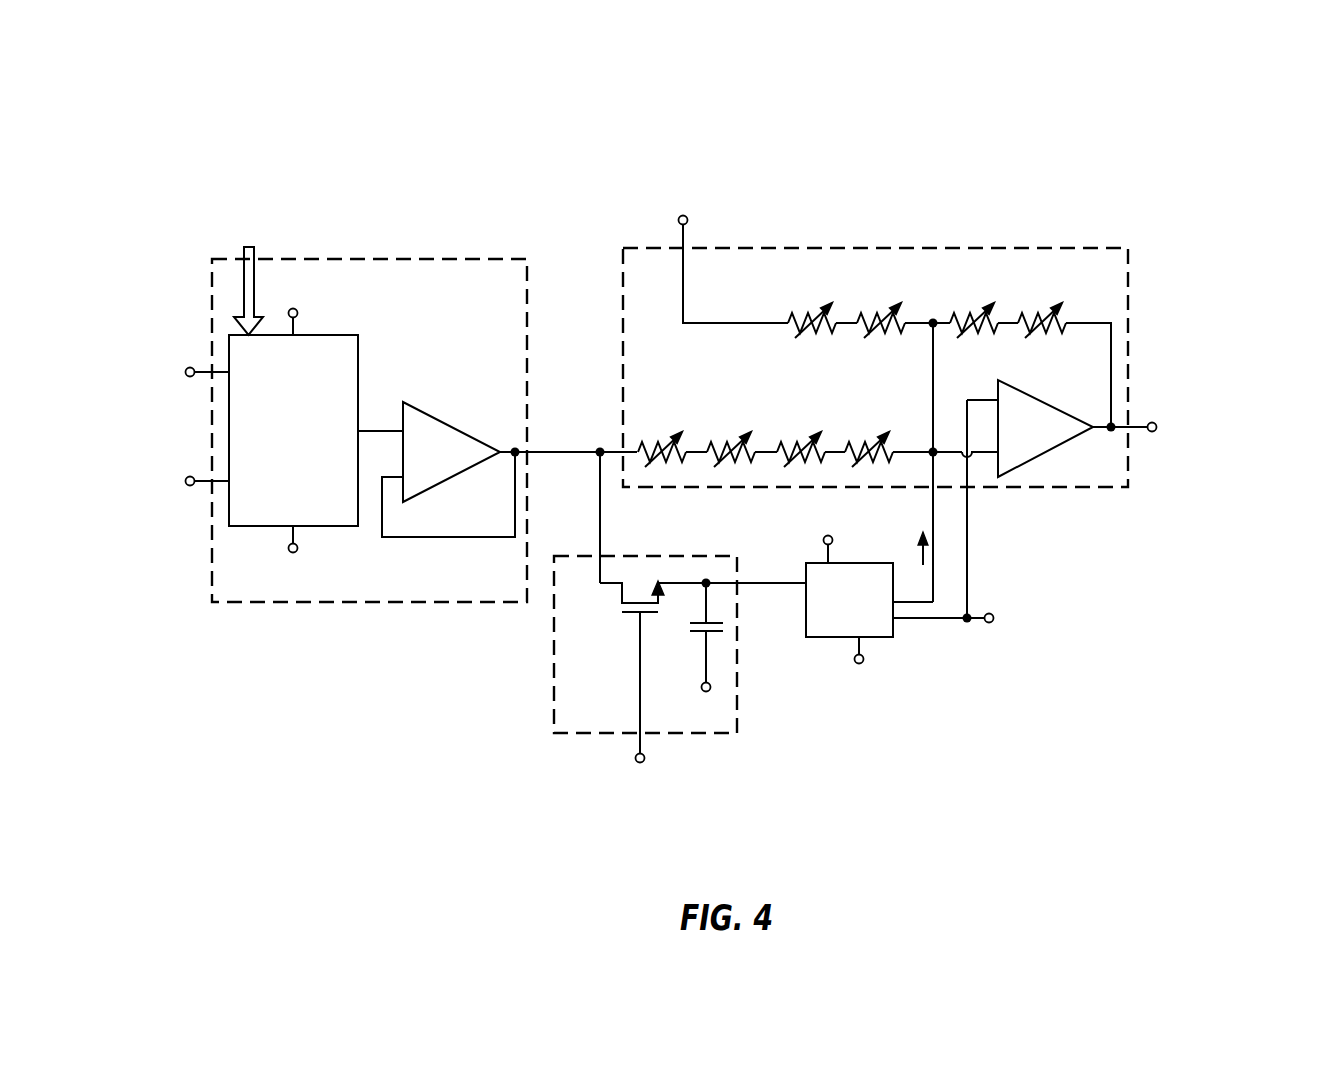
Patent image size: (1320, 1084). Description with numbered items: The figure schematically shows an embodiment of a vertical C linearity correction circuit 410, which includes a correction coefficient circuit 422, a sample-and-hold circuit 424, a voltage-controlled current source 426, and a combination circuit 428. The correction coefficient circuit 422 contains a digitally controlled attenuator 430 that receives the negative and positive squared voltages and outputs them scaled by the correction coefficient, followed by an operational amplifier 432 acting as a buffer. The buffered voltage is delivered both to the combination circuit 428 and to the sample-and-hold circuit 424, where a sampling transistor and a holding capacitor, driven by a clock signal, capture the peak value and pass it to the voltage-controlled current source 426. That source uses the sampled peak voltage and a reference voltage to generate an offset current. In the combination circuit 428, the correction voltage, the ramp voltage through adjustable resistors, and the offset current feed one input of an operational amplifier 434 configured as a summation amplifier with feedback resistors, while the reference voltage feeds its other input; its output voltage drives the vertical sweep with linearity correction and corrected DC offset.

The vertical C linearity correction circuit 410 is at (1082, 118).
The correction coefficient circuit 422 is at (273, 602).
The sample-and-hold circuit 424 is at (737, 733).
The voltage-controlled current source 426 is at (807, 620).
The combination circuit 428 is at (1102, 488).
The digitally controlled attenuator 430 is at (359, 335).
The operational amplifier 432 is at (447, 422).
The operational amplifier 434 is at (1068, 411).